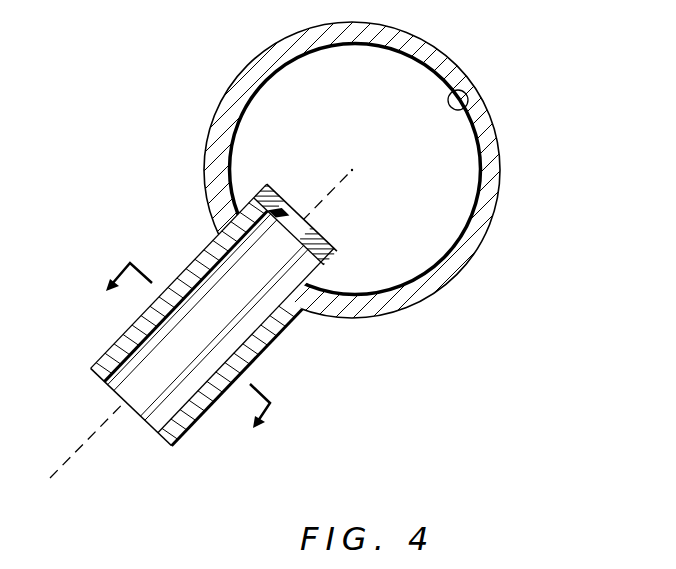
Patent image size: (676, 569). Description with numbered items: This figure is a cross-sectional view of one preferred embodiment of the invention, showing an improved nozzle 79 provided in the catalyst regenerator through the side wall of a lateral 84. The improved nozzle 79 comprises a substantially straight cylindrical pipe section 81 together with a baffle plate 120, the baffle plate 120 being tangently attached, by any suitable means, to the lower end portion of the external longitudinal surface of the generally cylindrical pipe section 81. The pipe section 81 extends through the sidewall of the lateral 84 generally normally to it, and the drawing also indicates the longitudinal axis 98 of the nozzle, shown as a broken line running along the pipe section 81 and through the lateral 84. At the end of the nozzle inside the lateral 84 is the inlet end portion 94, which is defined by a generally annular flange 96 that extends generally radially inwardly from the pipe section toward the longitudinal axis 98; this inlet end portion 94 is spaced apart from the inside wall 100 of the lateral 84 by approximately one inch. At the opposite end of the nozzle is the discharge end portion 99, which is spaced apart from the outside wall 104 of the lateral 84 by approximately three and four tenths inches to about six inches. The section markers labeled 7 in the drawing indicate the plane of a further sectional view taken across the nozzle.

The lateral 84 is at (428, 50).
The inside wall 100 is at (469, 93).
The outside wall 104 is at (500, 172).
The annular flange 96 is at (272, 200).
The inlet end portion 94 is at (326, 241).
The cylindrical pipe section 81 is at (197, 267).
The discharge end portion 99 is at (108, 390).
The longitudinal axis 98 is at (78, 446).
The baffle plate 120 is at (180, 428).
The improved nozzle 79 is at (292, 355).
The section line 7- 7 is at (188, 345).